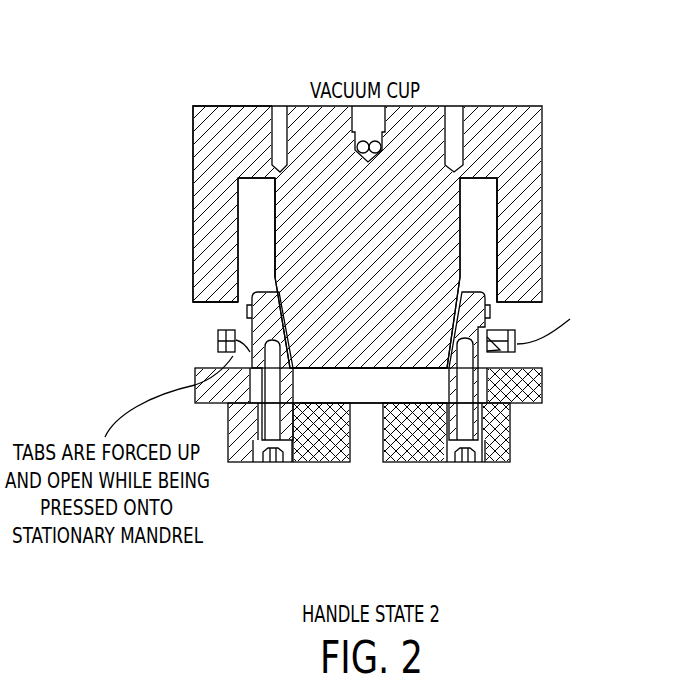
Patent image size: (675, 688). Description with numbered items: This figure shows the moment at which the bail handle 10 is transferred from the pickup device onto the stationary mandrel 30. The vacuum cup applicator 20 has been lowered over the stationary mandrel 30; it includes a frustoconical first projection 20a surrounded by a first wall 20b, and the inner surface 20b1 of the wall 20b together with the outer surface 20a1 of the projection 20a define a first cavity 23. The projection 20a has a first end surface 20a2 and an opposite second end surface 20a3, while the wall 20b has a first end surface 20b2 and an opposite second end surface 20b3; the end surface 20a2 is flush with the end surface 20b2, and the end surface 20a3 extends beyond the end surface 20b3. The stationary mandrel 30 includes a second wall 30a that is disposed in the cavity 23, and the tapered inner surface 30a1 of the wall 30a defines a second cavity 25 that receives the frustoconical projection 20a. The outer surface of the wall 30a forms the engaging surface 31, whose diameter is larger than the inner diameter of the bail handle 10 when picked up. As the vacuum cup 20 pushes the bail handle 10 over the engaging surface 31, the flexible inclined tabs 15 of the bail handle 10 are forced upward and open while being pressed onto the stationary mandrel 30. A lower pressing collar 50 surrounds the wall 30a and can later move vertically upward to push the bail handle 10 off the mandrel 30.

The bail handle 10 is at (570, 318).
The inclined tabs 15 is at (490, 345).
The vacuum cup applicator 20 is at (430, 233).
The first projection 20a is at (340, 233).
The outer surface of projection 20a1 is at (275, 247).
The first end surface of projection 20a2 is at (303, 106).
The second end surface of projection 20a3 is at (343, 370).
The first wall 20b is at (523, 248).
The inner surface of first wall 20b1 is at (497, 190).
The first end surface of first wall 20b2 is at (227, 106).
The second end surface of first wall 20b3 is at (245, 302).
The first cavity 23 is at (252, 269).
The second cavity 25 is at (420, 383).
The stationary mandrel 30 is at (500, 453).
The second wall 30a is at (483, 303).
The inner surface of second wall 30a1 is at (287, 378).
The engaging surface 31 is at (250, 330).
The lower pressing collar 50 is at (527, 385).